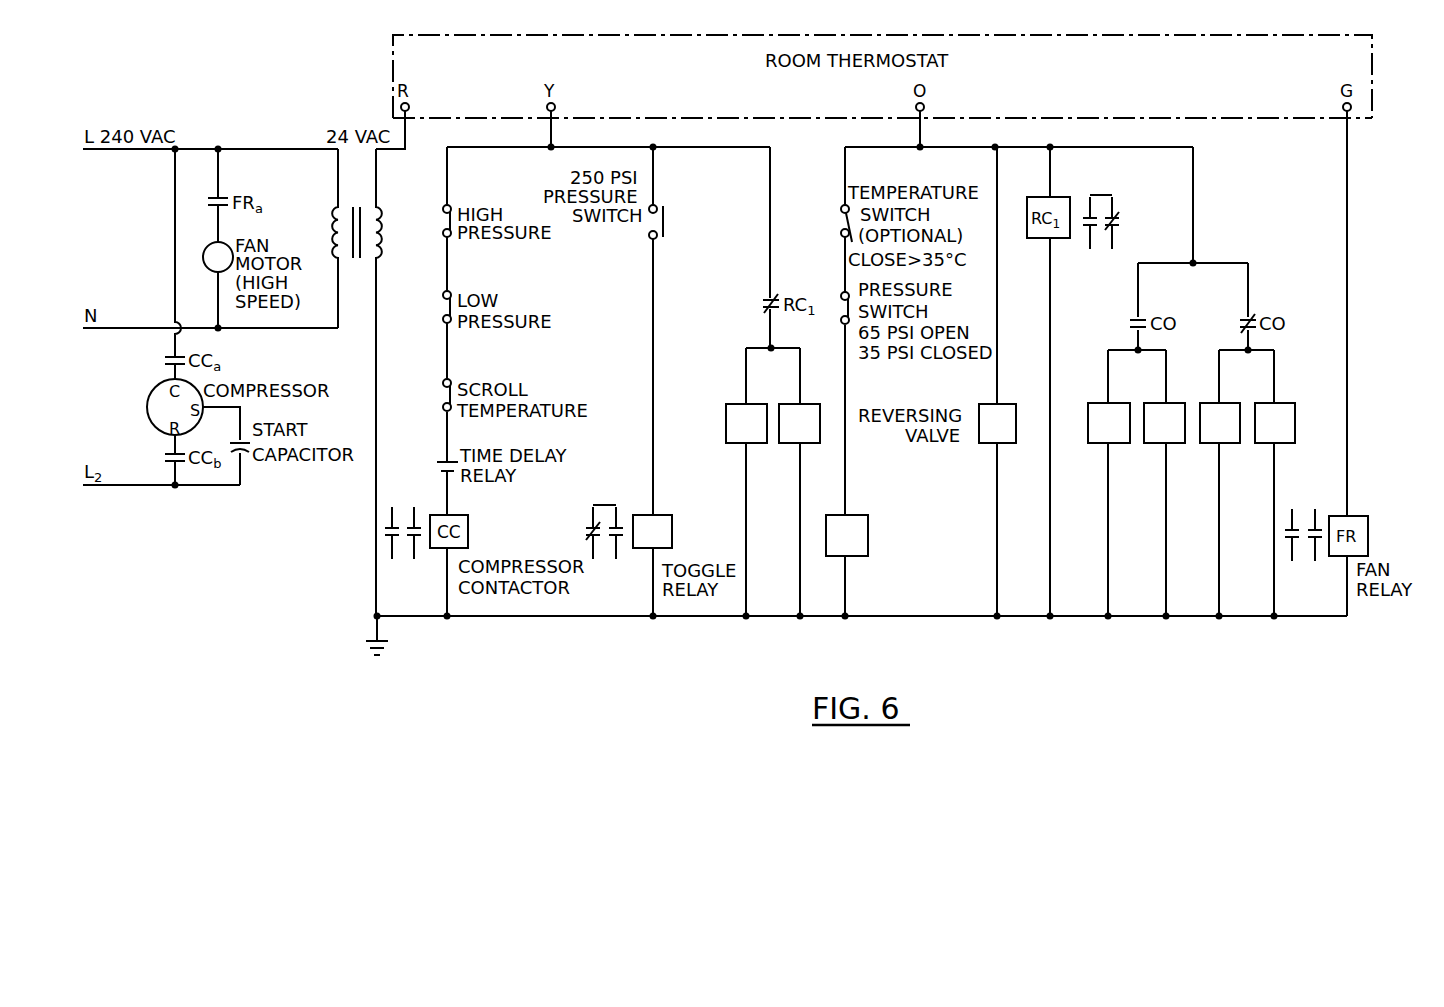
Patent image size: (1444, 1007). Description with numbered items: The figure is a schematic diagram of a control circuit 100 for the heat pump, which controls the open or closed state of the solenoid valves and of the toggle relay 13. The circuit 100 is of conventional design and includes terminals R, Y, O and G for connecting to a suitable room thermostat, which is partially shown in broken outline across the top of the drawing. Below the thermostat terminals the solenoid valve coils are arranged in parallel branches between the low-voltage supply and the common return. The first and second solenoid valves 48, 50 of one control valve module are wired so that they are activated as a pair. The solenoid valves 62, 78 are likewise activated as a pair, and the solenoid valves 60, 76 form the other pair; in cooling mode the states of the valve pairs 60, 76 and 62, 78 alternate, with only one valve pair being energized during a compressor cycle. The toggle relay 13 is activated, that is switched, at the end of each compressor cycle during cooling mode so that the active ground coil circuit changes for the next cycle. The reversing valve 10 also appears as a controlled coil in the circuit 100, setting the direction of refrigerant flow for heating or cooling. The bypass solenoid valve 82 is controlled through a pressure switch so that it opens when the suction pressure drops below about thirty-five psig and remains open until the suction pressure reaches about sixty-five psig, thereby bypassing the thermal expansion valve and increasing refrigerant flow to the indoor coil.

The reversing valve 10 is at (1008, 404).
The toggle relay 13 is at (663, 515).
The first solenoid valve 48 is at (753, 403).
The second solenoid valve 50 is at (808, 403).
The first solenoid valve 60 is at (1283, 402).
The second solenoid valve 62 is at (1175, 402).
The solenoid valve 76 is at (1228, 402).
The solenoid valve 78 is at (1117, 402).
The solenoid valve 82 is at (866, 515).
The control circuit 100 is at (298, 548).